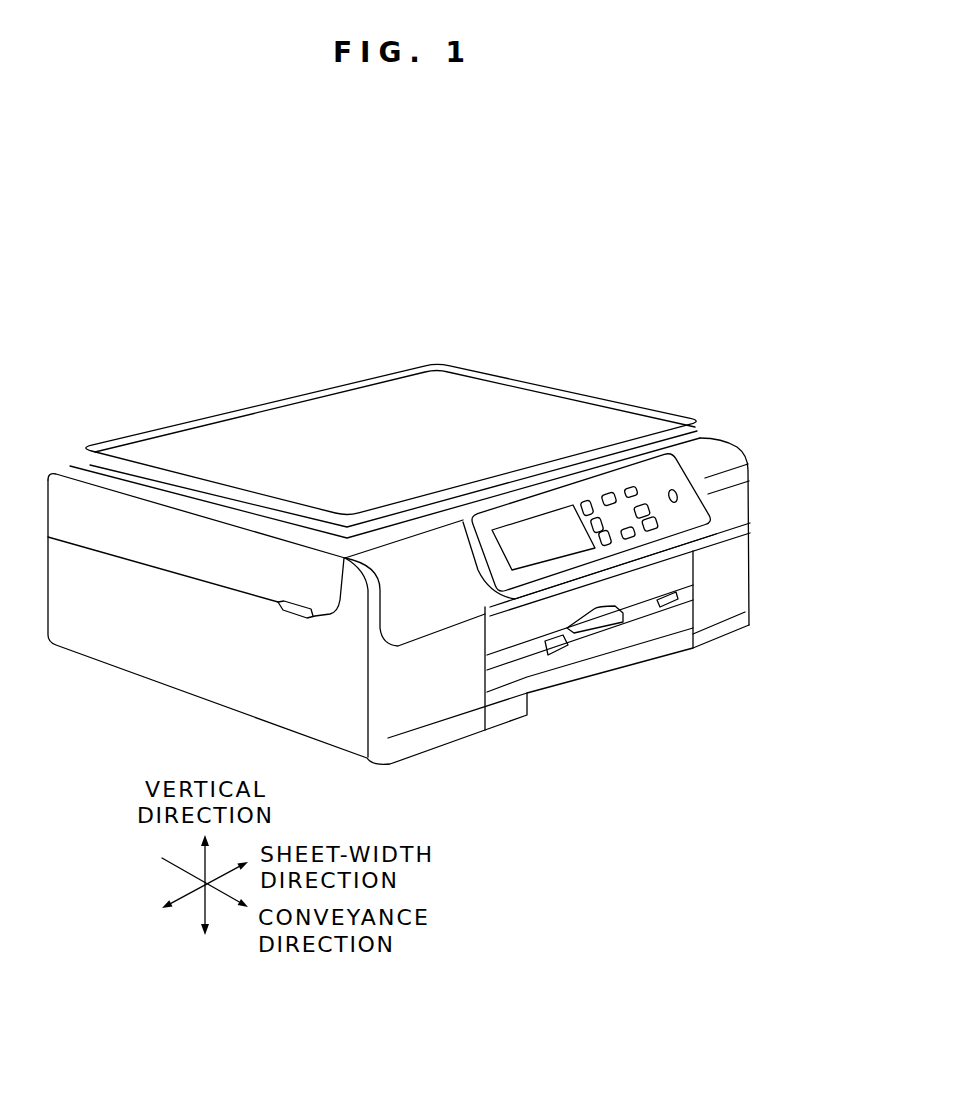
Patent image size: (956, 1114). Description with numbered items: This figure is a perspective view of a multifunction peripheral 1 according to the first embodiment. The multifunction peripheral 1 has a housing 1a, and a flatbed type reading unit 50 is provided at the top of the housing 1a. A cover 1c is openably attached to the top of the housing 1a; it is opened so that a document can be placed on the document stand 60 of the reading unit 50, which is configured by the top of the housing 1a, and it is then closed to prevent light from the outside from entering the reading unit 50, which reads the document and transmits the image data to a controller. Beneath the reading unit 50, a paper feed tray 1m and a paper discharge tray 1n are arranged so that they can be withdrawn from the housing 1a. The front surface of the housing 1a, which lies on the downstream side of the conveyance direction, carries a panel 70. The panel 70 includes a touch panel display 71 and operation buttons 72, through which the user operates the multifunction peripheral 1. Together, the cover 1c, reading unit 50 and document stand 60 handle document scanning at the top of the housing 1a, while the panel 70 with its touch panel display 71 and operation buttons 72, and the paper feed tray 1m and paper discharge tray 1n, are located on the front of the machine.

The multifunction peripheral 1 is at (536, 226).
The housing 1a is at (738, 556).
The cover 1c is at (128, 442).
The paper feed tray 1m is at (602, 647).
The paper discharge tray 1n is at (630, 612).
The flatbed type reading unit 50 is at (553, 388).
The document stand 60 is at (700, 437).
The panel 70 is at (690, 511).
The touch panel display 71 is at (533, 518).
The operation buttons 72 is at (607, 493).